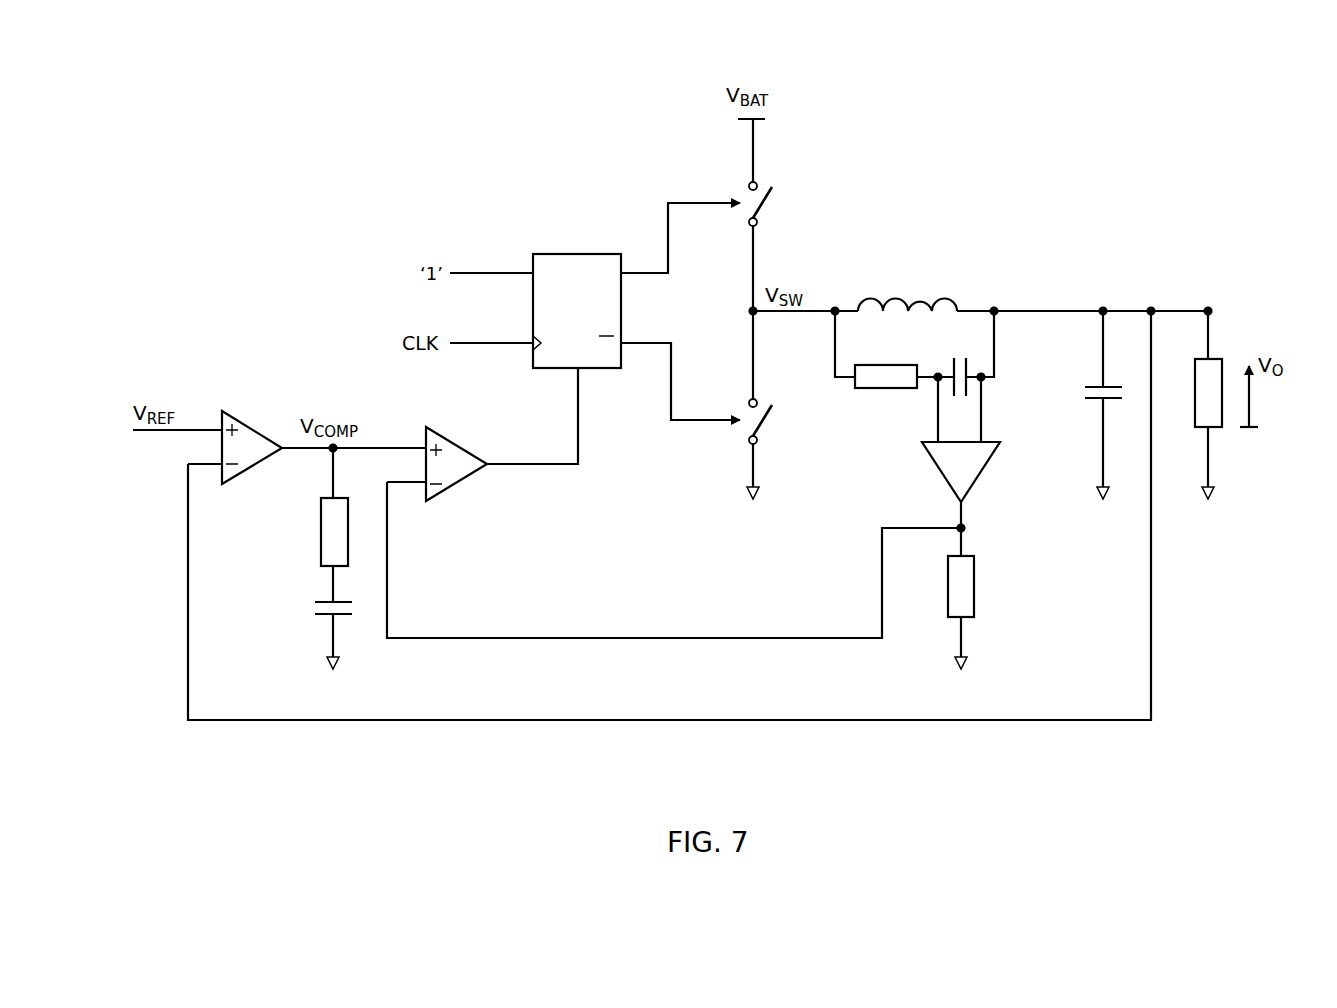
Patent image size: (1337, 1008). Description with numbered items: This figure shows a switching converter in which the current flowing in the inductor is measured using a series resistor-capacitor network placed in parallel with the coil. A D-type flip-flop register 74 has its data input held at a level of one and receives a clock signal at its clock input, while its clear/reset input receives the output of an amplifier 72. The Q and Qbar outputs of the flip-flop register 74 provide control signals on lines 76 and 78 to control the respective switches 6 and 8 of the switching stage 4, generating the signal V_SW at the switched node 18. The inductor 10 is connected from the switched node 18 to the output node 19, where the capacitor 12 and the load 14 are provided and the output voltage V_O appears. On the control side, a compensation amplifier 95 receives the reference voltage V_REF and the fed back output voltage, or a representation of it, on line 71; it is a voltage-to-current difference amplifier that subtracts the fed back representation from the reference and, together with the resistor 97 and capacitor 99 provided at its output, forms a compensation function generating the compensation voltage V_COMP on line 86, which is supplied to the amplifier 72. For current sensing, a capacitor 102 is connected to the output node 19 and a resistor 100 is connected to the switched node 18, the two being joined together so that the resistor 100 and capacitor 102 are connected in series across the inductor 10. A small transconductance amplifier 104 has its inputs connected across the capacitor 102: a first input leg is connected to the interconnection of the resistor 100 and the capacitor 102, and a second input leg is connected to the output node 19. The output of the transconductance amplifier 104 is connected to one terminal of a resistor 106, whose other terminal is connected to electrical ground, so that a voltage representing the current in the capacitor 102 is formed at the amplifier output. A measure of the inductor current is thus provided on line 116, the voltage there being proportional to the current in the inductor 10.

The switching stage 4 is at (782, 150).
The switch 6 is at (760, 209).
The switch 8 is at (760, 427).
The inductor 10 is at (900, 300).
The capacitor 12 is at (1093, 402).
The load 14 is at (1202, 430).
The switched node 18 is at (748, 307).
The output node 19 is at (1209, 308).
The line 71 is at (708, 722).
The amplifier 72 is at (458, 440).
The D-type flip-flop register 74 is at (565, 254).
The line 76 is at (702, 200).
The line 78 is at (702, 424).
The line 86 is at (406, 447).
The compensation amplifier 95 is at (241, 422).
The resistor 97 is at (320, 525).
The capacitor 99 is at (326, 600).
The resistor 100 is at (888, 390).
The capacitor 102 is at (952, 364).
The transconductance amplifier 104 is at (985, 472).
The resistor 106 is at (968, 626).
The line 116 is at (748, 638).